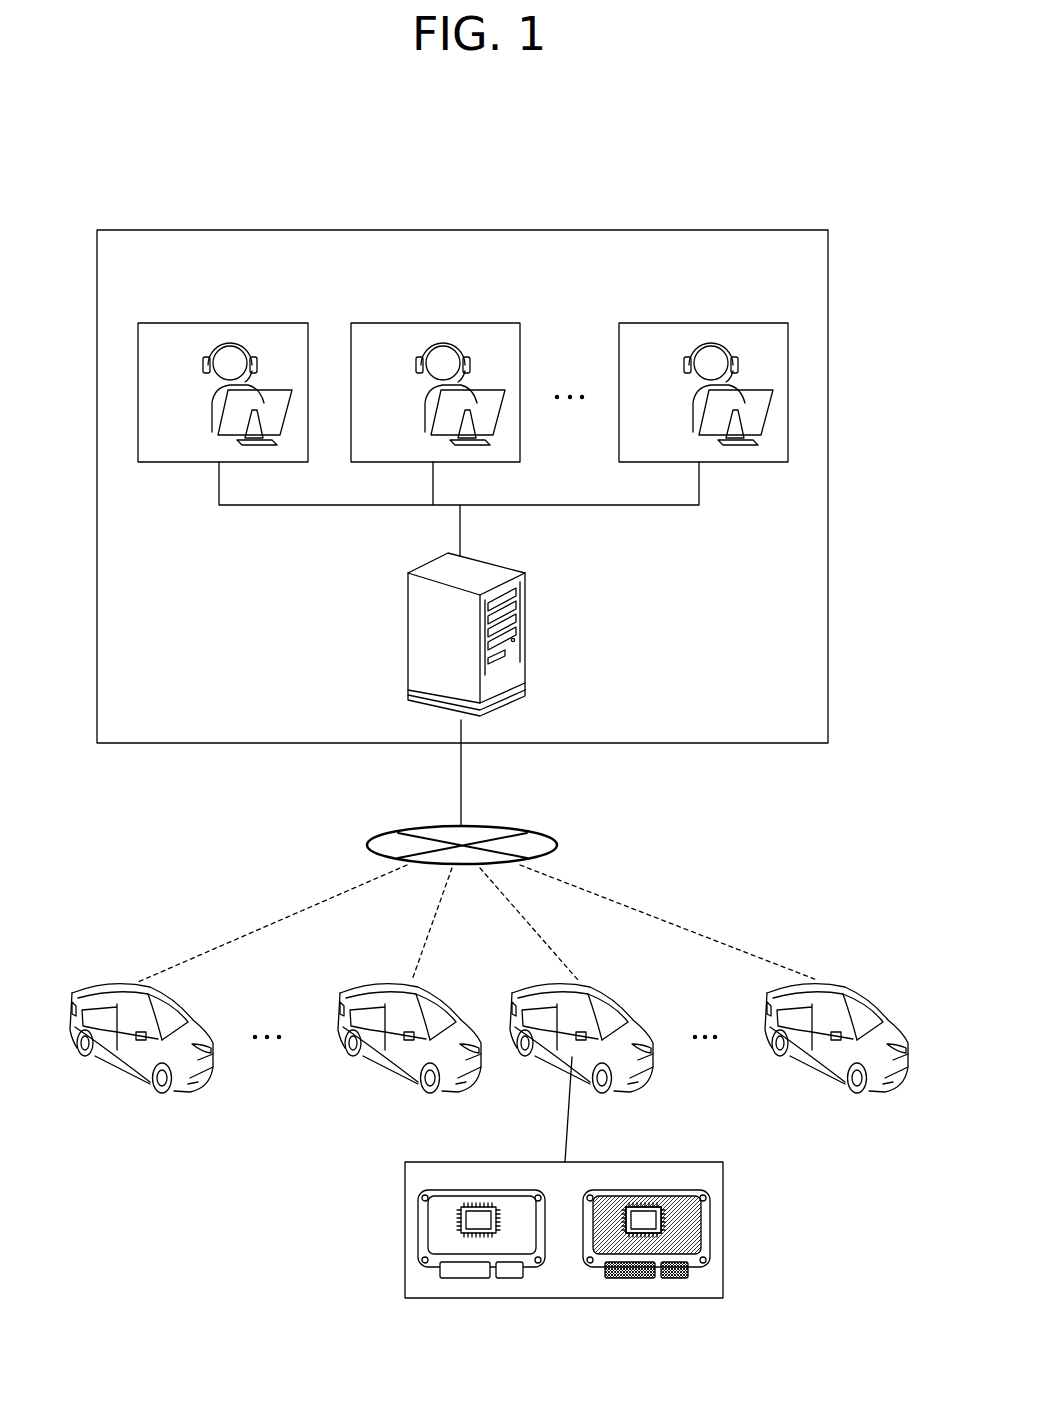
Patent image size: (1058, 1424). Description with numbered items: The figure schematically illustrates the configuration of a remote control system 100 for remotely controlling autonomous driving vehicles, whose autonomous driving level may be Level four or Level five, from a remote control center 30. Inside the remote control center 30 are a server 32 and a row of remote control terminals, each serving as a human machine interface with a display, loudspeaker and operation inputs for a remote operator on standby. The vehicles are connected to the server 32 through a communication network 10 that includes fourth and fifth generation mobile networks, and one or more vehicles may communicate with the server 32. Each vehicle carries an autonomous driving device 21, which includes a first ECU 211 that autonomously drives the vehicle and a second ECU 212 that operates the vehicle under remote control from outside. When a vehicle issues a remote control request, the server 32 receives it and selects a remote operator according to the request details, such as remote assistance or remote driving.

The remote control system 100 is at (205, 136).
The remote control center 30 is at (516, 230).
The server 32 is at (408, 635).
The communication network 10 is at (557, 845).
The autonomous driving device 21 is at (703, 1162).
The first electronic control unit 211 is at (481, 1190).
The second ECU 212 is at (638, 1190).